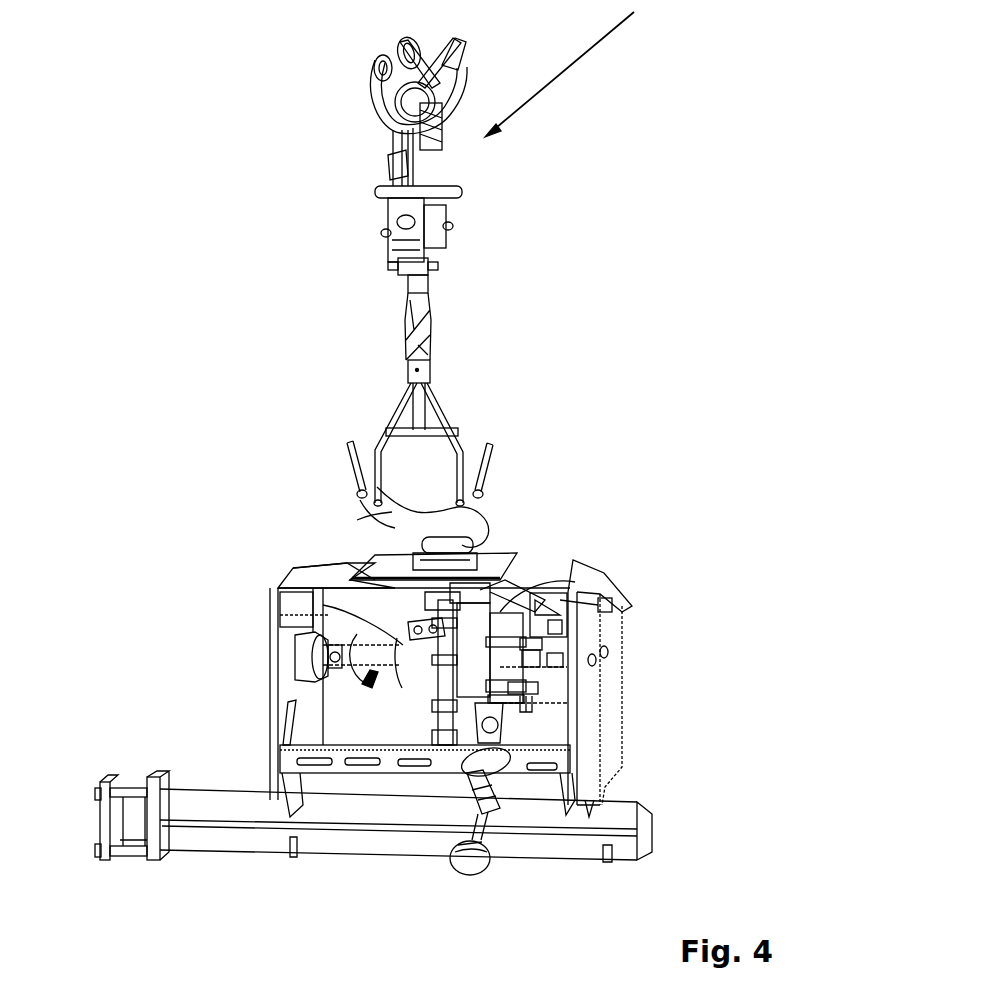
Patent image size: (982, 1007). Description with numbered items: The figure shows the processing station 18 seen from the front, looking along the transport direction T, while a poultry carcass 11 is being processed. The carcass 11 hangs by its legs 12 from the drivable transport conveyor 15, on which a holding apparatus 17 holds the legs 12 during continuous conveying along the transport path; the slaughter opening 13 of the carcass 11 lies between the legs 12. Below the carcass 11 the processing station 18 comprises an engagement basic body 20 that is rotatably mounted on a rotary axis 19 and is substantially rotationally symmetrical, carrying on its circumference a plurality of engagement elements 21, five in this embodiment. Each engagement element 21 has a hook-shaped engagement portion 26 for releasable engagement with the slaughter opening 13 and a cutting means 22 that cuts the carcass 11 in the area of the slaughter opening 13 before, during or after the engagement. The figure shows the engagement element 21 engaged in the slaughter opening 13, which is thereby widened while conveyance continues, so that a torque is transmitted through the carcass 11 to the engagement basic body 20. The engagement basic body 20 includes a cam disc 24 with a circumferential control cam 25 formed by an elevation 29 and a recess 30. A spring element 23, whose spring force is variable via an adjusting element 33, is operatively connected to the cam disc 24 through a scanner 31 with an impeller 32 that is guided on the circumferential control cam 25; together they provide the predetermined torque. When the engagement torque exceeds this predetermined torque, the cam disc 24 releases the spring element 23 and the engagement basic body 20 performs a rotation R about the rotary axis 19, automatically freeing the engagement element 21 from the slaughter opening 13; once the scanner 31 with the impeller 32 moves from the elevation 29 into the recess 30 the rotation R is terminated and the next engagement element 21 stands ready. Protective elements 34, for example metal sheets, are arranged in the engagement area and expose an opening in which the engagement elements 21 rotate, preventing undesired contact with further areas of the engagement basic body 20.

The transport direction T is at (573, 60).
The transport conveyor 15 is at (354, 134).
The holding apparatus 17 is at (446, 422).
The processing station 18 is at (243, 475).
The legs 12 is at (392, 505).
The poultry carcass 11 is at (490, 538).
The slaughter opening 13 is at (488, 536).
The protective elements 34 is at (322, 571).
The cutting means 22 is at (437, 622).
The rotary axis 19 is at (305, 648).
The rotation R is at (345, 692).
The engagement element 21 is at (410, 668).
The hook-shaped engagement portion 26 is at (410, 668).
The engagement basic body 20 is at (530, 658).
The cam disc 24 is at (635, 590).
The elevation 29 is at (635, 590).
The circumferential control cam 25 is at (618, 628).
The recess 30 is at (618, 628).
The impeller 32 is at (538, 690).
The scanner 31 is at (532, 704).
The spring element 23 is at (504, 802).
The adjusting element 33 is at (470, 868).